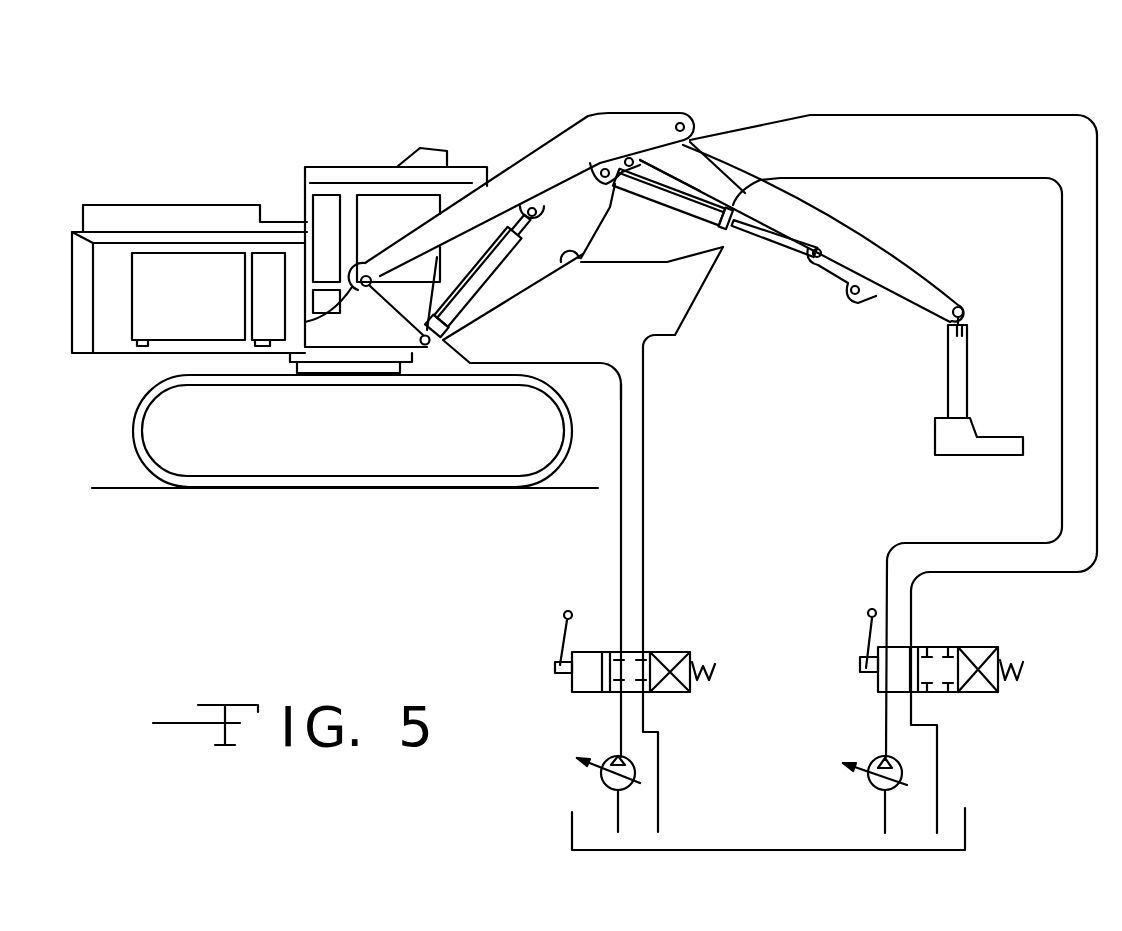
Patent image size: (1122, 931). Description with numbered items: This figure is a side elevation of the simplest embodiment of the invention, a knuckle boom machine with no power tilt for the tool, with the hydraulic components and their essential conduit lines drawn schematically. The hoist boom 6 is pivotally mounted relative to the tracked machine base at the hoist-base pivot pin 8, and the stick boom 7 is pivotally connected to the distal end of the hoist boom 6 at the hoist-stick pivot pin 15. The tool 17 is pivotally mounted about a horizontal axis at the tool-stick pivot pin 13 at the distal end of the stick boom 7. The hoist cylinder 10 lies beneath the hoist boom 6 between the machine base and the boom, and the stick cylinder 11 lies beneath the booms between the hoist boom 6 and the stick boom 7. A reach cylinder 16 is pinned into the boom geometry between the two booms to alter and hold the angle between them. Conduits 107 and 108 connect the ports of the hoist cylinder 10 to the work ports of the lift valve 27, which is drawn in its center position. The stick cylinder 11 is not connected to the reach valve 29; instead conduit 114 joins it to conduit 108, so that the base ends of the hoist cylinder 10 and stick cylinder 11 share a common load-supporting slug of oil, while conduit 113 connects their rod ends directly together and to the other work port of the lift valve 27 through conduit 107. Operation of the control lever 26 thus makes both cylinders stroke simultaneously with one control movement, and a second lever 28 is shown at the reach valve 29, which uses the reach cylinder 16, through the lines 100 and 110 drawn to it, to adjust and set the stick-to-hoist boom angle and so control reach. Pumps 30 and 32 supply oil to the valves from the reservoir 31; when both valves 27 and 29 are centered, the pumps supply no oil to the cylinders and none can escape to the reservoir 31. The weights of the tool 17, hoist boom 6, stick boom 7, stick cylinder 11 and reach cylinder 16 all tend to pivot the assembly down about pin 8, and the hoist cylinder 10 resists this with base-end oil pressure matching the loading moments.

The hoist boom 6 is at (526, 157).
The stick boom 7 is at (757, 178).
The hoist-base pivot pin 8 is at (364, 287).
The hydraulic hoist cylinder 10 is at (487, 227).
The stick cylinder 11 is at (800, 277).
The tool-stick pivot pin 13 is at (962, 305).
The hoist-stick pivot pin 15 is at (690, 118).
The reach cylinder 16 is at (682, 178).
The tool 17 is at (948, 396).
The control lever 26 is at (556, 648).
The lift valve 27 is at (695, 653).
The control lever 28 is at (866, 632).
The reach valve 29 is at (1000, 652).
The hydraulic pump 30 is at (612, 757).
The reservoir 31 is at (570, 827).
The hydraulic pump 32 is at (857, 755).
The hydraulic line 100 is at (1033, 178).
The conduit 107 is at (644, 540).
The conduit 108 is at (620, 543).
The hydraulic line 110 is at (935, 115).
The conduit 113 is at (668, 263).
The conduit 114 is at (500, 318).